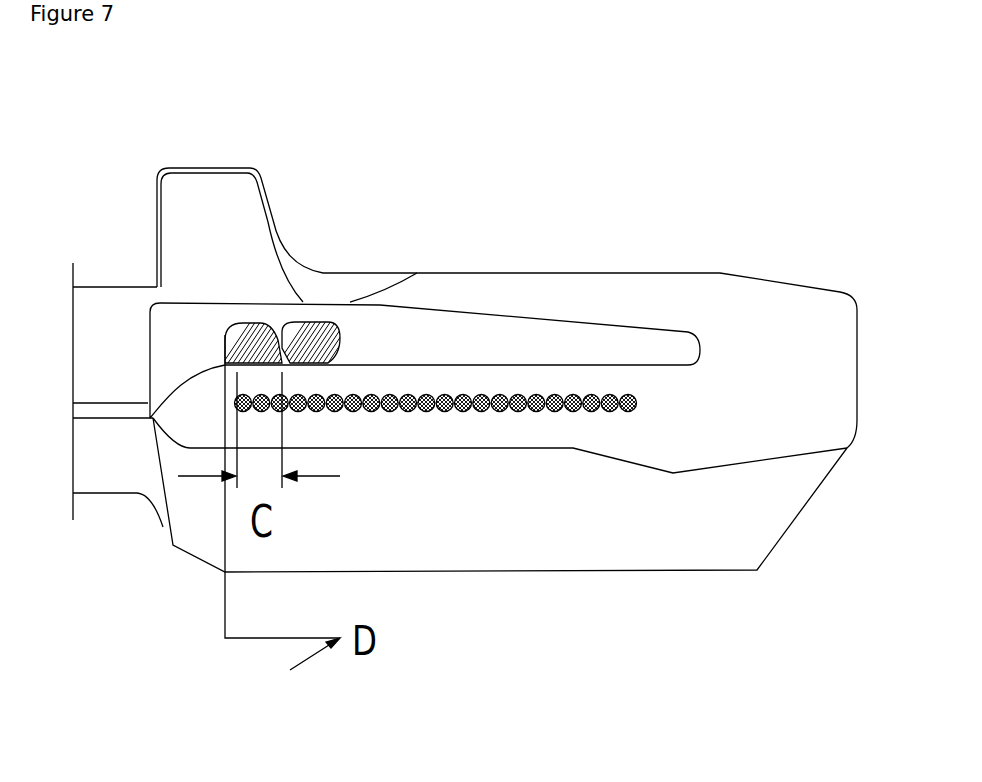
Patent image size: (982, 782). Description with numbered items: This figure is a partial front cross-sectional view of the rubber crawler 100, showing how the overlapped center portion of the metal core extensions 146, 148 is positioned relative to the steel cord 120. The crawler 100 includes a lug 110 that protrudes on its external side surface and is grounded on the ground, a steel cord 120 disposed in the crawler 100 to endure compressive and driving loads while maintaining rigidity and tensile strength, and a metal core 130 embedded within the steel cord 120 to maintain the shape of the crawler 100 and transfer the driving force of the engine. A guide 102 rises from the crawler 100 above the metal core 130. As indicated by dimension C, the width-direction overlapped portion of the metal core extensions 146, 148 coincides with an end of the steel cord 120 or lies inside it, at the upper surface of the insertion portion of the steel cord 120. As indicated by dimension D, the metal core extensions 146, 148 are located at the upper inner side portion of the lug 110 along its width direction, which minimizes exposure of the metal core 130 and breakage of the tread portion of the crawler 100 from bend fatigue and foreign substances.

The rubber crawler 100 is at (657, 268).
The guide 102 is at (210, 191).
The lug 110 is at (648, 543).
The steel cord 120 is at (500, 408).
The metal core 130 is at (435, 338).
The metal core extension 146 is at (308, 327).
The metal core extension 148 is at (243, 327).